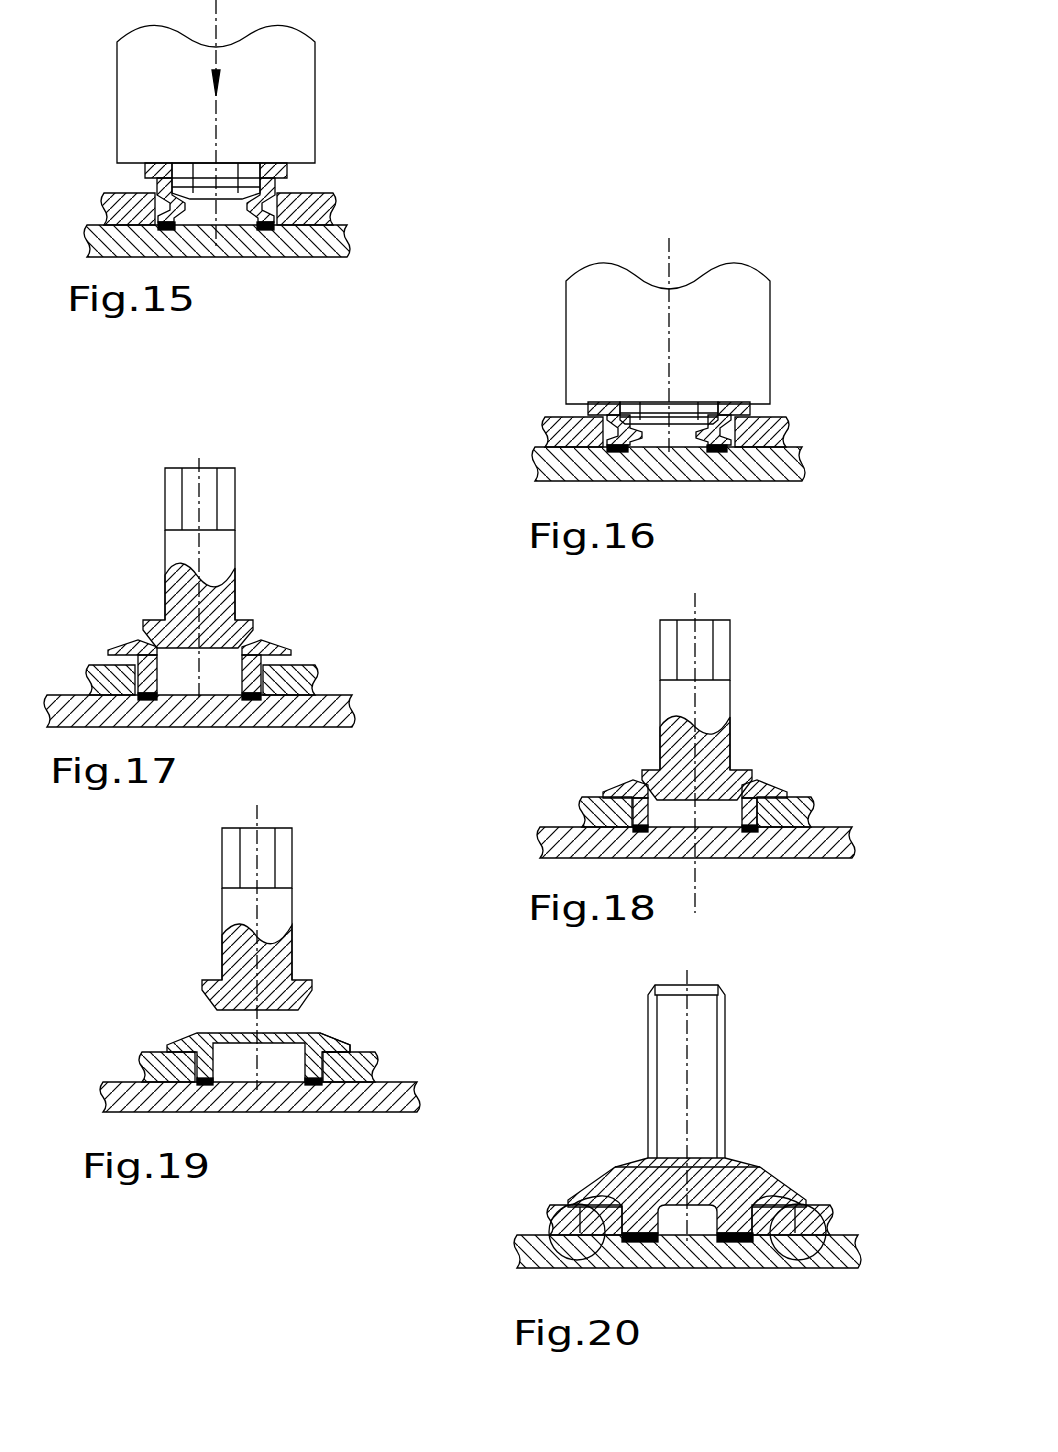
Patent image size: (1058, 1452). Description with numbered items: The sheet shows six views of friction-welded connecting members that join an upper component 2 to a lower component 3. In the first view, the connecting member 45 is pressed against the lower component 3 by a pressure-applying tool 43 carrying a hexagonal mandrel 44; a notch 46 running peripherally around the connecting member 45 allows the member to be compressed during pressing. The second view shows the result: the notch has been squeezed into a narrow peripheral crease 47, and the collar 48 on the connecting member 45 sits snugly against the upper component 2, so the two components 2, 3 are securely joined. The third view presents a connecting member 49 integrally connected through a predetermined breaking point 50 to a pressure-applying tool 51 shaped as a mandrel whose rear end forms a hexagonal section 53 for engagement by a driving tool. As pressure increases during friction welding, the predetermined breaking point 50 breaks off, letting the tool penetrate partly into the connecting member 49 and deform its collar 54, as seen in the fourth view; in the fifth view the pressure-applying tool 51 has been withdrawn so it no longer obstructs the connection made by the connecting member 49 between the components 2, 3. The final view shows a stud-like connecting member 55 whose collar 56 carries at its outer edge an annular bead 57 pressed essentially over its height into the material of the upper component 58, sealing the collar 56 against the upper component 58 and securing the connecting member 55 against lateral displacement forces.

In FIG. 15, the upper component 2 is at (317, 210).
In FIG. 16, the upper component 2 is at (771, 433).
In FIG. 17, the upper component 2 is at (293, 677).
In FIG. 18, the upper component 2 is at (812, 818).
In FIG. 19, the upper component 2 is at (360, 1063).
In FIG. 20, the upper component 2 is at (690, 1220).
In FIG. 15, the lower component 3 is at (312, 237).
In FIG. 16, the lower component 3 is at (761, 460).
In FIG. 17, the lower component 3 is at (333, 708).
In FIG. 18, the lower component 3 is at (830, 847).
In FIG. 19, the lower component 3 is at (415, 1093).
In FIG. 20, the lower component 3 is at (687, 1250).
In FIG. 15, the pressure-applying tool 43 is at (273, 95).
In FIG. 16, the pressure-applying tool 43 is at (597, 319).
In FIG. 15, the hexagonal mandrel 44 is at (222, 187).
In FIG. 16, the hexagonal mandrel 44 is at (676, 407).
In FIG. 15, the connecting member 45 is at (267, 184).
In FIG. 16, the connecting member 45 is at (640, 428).
In FIG. 15, the notch 46 is at (160, 207).
In FIG. 16, the peripheral crease 47 is at (714, 418).
In FIG. 15, the collar 48 is at (293, 172).
In FIG. 16, the collar 48 is at (599, 406).
In FIG. 17, the connecting member 49 is at (240, 667).
In FIG. 18, the connecting member 49 is at (750, 805).
In FIG. 19, the connecting member 49 is at (305, 1063).
In FIG. 17, the predetermined breaking point 50 is at (273, 644).
In FIG. 17, the pressure-applying tool 51 is at (223, 542).
In FIG. 18, the pressure-applying tool 51 is at (688, 703).
In FIG. 19, the pressure-applying tool 51 is at (270, 907).
In FIG. 17, the hexagonal section 53 is at (225, 493).
In FIG. 18, the hexagonal section 53 is at (685, 652).
In FIG. 19, the hexagonal section 53 is at (282, 858).
In FIG. 17, the collar 54 is at (132, 645).
In FIG. 18, the collar 54 is at (623, 787).
In FIG. 19, the collar 54 is at (328, 1038).
In FIG. 20, the connecting member 55 is at (742, 1180).
In FIG. 20, the collar 56 is at (775, 1183).
In FIG. 20, the annular bead 57 is at (572, 1259).
In FIG. 20, the upper component 58 is at (563, 1223).